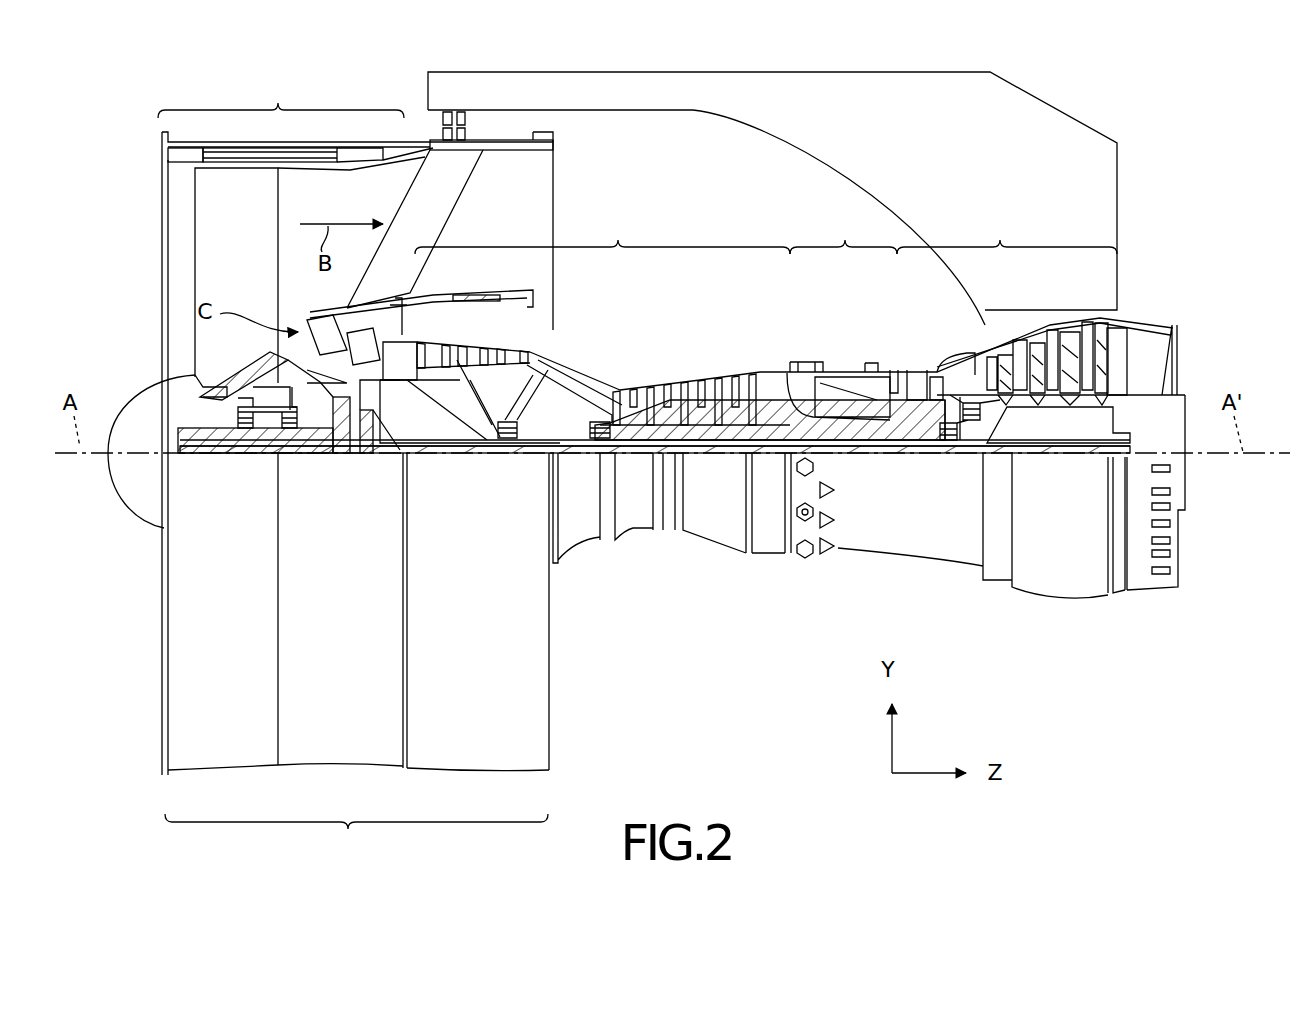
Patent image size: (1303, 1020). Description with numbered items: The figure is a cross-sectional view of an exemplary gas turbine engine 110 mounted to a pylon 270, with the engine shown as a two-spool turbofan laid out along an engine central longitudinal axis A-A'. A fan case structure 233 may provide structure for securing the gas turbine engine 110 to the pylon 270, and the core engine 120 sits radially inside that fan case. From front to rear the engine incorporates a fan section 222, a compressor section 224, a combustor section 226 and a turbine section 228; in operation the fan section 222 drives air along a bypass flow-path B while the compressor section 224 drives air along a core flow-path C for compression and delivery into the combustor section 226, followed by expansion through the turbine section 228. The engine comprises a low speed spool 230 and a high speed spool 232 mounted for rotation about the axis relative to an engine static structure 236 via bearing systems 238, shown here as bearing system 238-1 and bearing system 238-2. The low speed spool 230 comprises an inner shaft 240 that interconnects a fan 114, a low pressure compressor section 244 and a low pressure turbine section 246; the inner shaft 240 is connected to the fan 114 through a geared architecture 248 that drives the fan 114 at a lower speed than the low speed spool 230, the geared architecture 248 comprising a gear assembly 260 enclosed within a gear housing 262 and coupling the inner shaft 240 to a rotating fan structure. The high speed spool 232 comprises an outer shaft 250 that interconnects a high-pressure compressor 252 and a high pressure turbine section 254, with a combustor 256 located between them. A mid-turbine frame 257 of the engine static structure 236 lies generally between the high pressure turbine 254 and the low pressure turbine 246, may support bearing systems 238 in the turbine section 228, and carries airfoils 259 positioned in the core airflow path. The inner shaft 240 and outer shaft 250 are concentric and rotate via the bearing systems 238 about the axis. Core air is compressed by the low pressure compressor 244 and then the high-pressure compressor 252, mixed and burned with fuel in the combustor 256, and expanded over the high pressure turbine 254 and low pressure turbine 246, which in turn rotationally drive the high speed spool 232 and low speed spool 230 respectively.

The gas turbine engine 110 is at (1192, 165).
The fan 114 is at (223, 266).
The core engine 120 is at (740, 278).
The fan section 222 is at (281, 95).
The compressor section 224 is at (602, 230).
The combustor section 226 is at (843, 230).
The turbine section 228 is at (1007, 230).
The low speed spool 230 is at (727, 466).
The high speed spool 232 is at (760, 423).
The fan case structure 233 is at (356, 841).
The engine static structure 236 is at (158, 785).
The bearing system 238 is at (953, 458).
The bearing system 238-1 is at (248, 440).
The bearing system 238-2 is at (505, 446).
The inner shaft 240 is at (578, 458).
The low pressure compressor section 244 is at (483, 352).
The low pressure turbine section 246 is at (1040, 336).
The geared architecture 248 is at (372, 478).
The outer shaft 250 is at (838, 456).
The high-pressure compressor 252 is at (703, 423).
The high pressure turbine section 254 is at (916, 375).
The combustor 256 is at (845, 390).
The mid-turbine frame 257 is at (947, 372).
The airfoils 259 is at (963, 400).
The gear assembly 260 is at (345, 460).
The gear housing 262 is at (380, 410).
The pylon 270 is at (1058, 121).